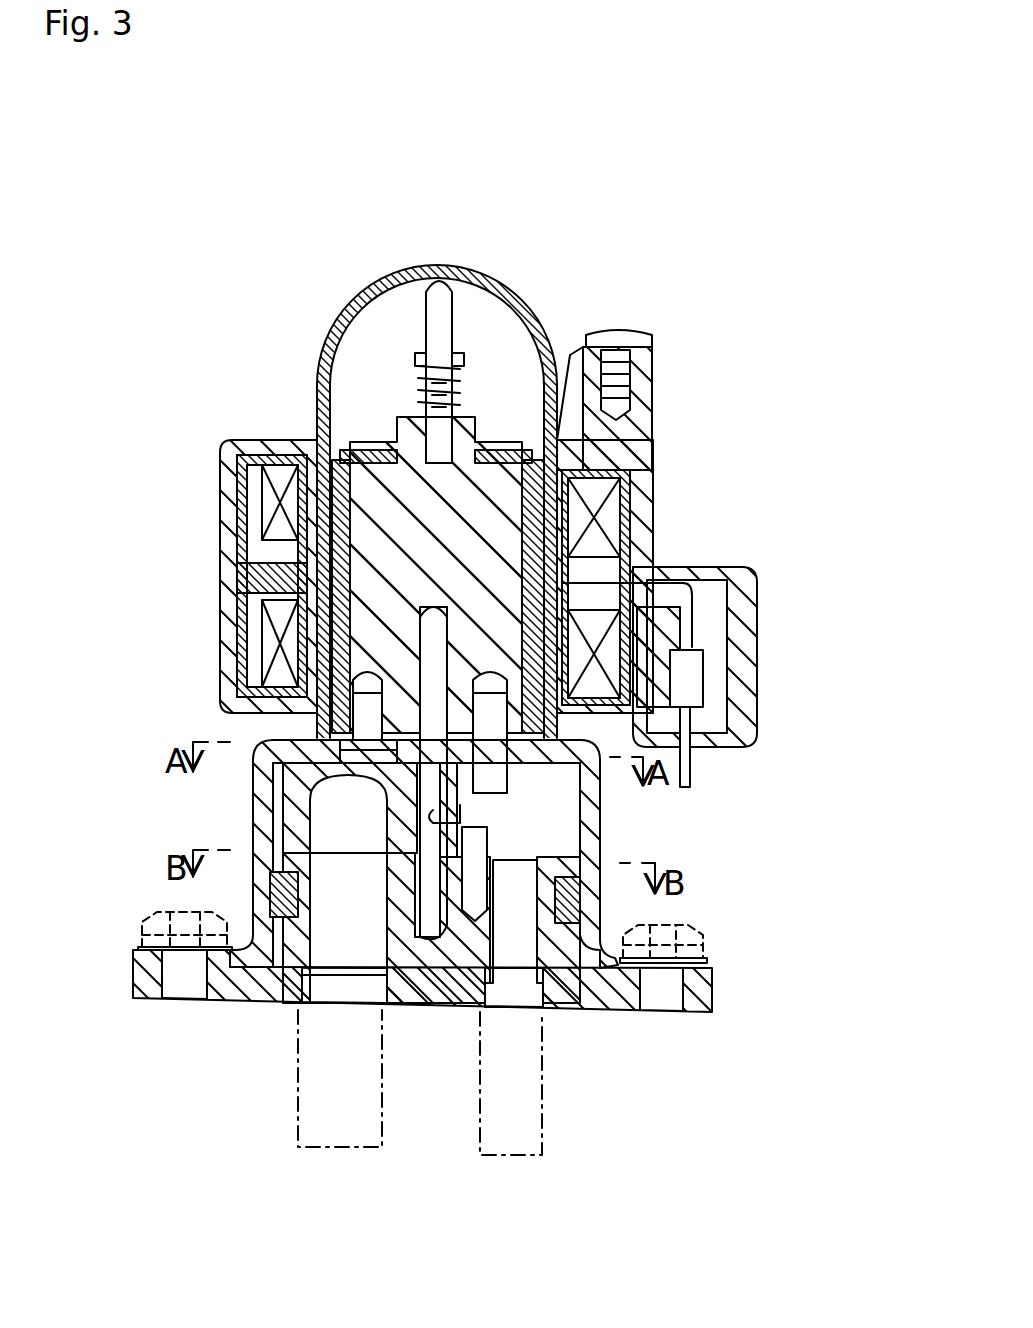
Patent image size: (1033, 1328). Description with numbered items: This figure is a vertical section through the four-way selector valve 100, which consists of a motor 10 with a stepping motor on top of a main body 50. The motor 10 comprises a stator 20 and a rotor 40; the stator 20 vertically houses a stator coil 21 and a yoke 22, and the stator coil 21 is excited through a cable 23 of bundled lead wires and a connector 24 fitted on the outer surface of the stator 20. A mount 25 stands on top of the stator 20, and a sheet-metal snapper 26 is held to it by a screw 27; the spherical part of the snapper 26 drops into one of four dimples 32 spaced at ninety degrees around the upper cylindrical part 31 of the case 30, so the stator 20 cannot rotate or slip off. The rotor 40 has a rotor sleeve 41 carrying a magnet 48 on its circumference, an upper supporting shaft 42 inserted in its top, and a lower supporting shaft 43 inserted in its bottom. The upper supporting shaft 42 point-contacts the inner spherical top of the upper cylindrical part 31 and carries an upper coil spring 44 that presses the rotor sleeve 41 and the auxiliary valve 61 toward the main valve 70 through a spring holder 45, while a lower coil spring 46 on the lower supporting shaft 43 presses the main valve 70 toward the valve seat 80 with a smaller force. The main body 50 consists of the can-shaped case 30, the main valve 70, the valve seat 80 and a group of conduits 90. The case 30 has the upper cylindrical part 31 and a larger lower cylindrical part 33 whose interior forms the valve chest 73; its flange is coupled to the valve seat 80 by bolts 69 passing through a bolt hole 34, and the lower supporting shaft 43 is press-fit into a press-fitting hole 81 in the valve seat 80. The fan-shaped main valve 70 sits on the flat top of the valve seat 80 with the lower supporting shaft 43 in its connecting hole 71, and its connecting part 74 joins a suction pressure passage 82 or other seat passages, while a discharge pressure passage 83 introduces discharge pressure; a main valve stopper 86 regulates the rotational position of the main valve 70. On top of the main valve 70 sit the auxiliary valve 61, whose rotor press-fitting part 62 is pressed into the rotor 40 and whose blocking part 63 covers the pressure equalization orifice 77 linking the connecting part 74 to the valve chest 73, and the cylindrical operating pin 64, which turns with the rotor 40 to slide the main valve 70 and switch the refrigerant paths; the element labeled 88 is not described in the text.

The four-way selector valve 100 is at (672, 228).
The motor 10 is at (768, 590).
The stator 20 is at (213, 432).
The stator coil 21 is at (262, 506).
The yoke 22 is at (275, 455).
The cable 23 is at (694, 780).
The connector 24 is at (715, 575).
The mount 25 is at (640, 365).
The snapper 26 is at (574, 350).
The screw 27 is at (642, 340).
The case 30 is at (253, 748).
The upper cylindrical part 31 is at (406, 268).
The dimples 32 is at (318, 430).
The lower cylindrical part 33 is at (262, 897).
The bolt hole 34 is at (186, 1000).
The rotor 40 is at (600, 505).
The rotor sleeve 41 is at (492, 470).
The upper supporting shaft 42 is at (446, 290).
The lower supporting shaft 43 is at (462, 622).
The upper coil spring 44 is at (420, 375).
The spring holder 45 is at (462, 362).
The lower coil spring 46 is at (509, 781).
The magnet 48 is at (270, 549).
The main body 50 is at (648, 811).
The auxiliary valve 61 is at (355, 700).
The rotor press-fitting part 62 is at (426, 668).
The blocking part 63 is at (300, 763).
The operating pin 64 is at (560, 843).
The bolts 69 is at (700, 953).
The main valve 70 is at (270, 800).
The connecting hole 71 is at (482, 822).
The valve chest 73 is at (600, 846).
The connecting part 74 is at (344, 928).
The pressure equalization orifice 77 is at (300, 812).
The valve seat 80 is at (722, 992).
The press-fitting hole 81 is at (419, 1004).
The suction pressure passage 82 is at (338, 1006).
The discharge pressure passage 83 is at (510, 1008).
The main valve stopper 86 is at (499, 881).
The seal ring 88 is at (578, 925).
The group of conduits 90 is at (560, 1136).